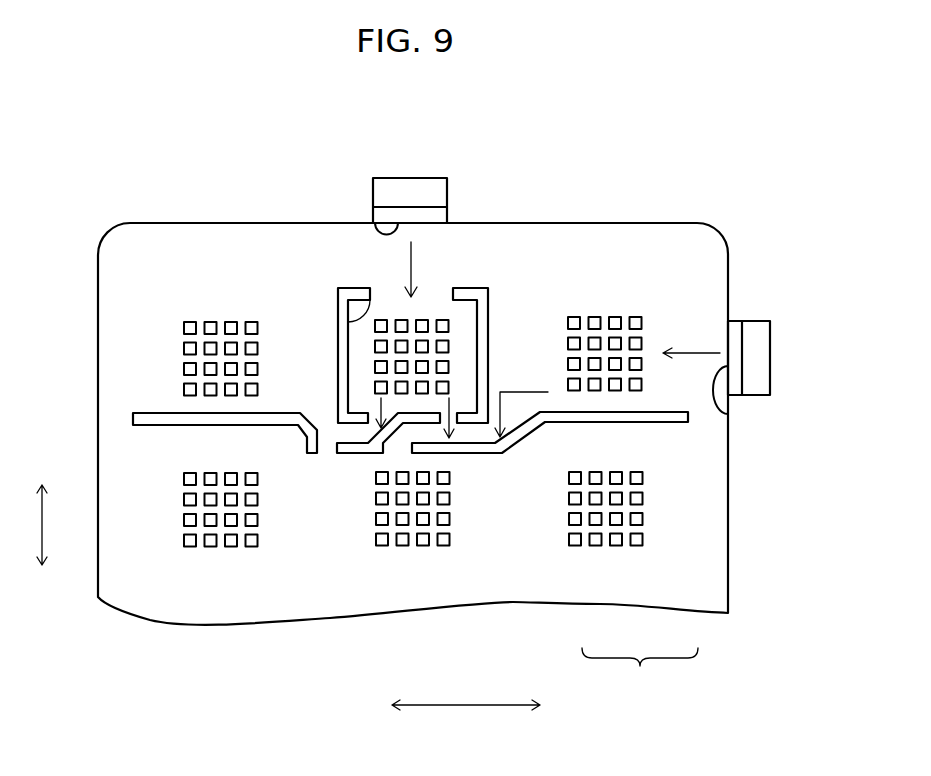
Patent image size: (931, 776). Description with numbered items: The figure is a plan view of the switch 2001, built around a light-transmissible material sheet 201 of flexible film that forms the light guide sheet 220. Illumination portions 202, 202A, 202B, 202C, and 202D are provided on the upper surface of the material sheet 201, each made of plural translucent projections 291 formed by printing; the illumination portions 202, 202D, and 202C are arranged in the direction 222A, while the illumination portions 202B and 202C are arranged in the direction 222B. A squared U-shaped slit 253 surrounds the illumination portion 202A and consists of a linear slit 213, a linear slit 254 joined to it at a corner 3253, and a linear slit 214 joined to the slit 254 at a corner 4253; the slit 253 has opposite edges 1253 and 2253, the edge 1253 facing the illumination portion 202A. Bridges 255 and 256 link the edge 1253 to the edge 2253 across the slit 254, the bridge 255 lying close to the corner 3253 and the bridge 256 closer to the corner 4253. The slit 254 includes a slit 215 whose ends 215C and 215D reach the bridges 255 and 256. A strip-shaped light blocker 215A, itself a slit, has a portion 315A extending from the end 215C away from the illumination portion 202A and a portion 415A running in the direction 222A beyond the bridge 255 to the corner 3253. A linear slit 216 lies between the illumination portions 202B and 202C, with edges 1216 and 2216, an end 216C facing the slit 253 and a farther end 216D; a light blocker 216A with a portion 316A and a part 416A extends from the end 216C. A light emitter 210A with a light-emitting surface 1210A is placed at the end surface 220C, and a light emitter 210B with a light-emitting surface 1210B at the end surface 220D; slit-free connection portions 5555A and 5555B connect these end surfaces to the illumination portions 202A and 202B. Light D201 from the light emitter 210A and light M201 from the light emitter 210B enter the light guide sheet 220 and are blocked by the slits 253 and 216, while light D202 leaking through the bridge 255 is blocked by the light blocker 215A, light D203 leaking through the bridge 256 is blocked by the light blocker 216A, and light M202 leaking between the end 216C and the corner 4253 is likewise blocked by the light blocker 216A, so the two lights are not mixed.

The switch 2001 is at (381, 362).
The light-transmissible material sheet 201 is at (381, 394).
The light guide sheet 220 is at (122, 243).
The end surface 220C is at (422, 223).
The end surface 220D is at (746, 321).
The light emitter 210A is at (415, 192).
The light emitter 210B is at (762, 352).
The light-emitting surface 1210A is at (390, 296).
The light-emitting surface 1210B is at (728, 414).
The edge of slit 216 1216 is at (615, 408).
The illumination portion 202 is at (184, 347).
The illumination portion 202A is at (452, 308).
The illumination portion 202B is at (601, 318).
The illumination portion 202C is at (643, 497).
The illumination portion 202D is at (424, 540).
The projections 291 is at (205, 320).
The slit 213 is at (338, 365).
The slit 253 is at (345, 289).
The edge of slit 253 1253 is at (360, 288).
The edge of slit 253 2253 is at (338, 385).
The connection portion 5555A is at (363, 290).
The light D201 is at (436, 305).
The slit 214 is at (483, 318).
The corner 4253 is at (491, 383).
The light M202 is at (522, 390).
The light M201 is at (700, 347).
The connection portion 5555B is at (683, 337).
The corner 3253 is at (338, 412).
The light D202 is at (343, 410).
The slit 215 is at (418, 416).
The slit 254 is at (340, 446).
The portion of light blocker 215A 415A is at (352, 455).
The light blocker 215A is at (364, 455).
The bridge 255 is at (373, 452).
The portion of light blocker 215A 315A is at (386, 454).
The end of slit 215 215C is at (395, 428).
The end of slit 215 215D is at (434, 425).
The light D203 is at (458, 418).
The bridge 256 is at (482, 447).
The slit 216 is at (617, 417).
The light blocker 216A is at (640, 676).
The part of light blocker 216A 416A is at (500, 443).
The portion of light blocker 216A 316A is at (523, 435).
The end of slit 216 216C is at (650, 421).
The end of slit 216 216D is at (688, 418).
The edge of slit 216 2216 is at (665, 420).
The direction 222A is at (484, 705).
The direction 222B is at (50, 549).